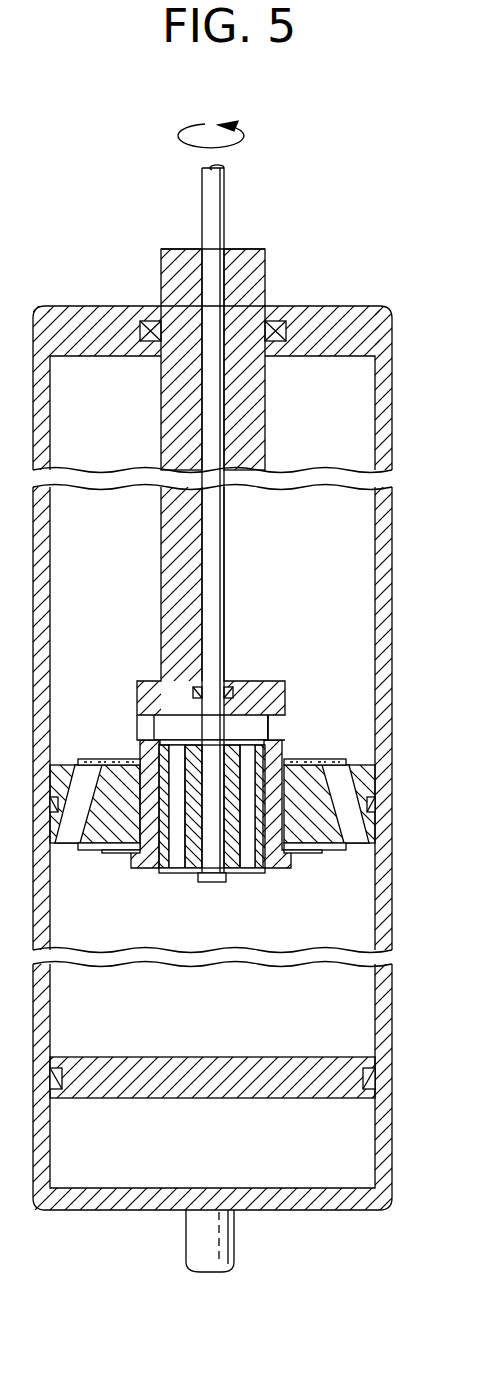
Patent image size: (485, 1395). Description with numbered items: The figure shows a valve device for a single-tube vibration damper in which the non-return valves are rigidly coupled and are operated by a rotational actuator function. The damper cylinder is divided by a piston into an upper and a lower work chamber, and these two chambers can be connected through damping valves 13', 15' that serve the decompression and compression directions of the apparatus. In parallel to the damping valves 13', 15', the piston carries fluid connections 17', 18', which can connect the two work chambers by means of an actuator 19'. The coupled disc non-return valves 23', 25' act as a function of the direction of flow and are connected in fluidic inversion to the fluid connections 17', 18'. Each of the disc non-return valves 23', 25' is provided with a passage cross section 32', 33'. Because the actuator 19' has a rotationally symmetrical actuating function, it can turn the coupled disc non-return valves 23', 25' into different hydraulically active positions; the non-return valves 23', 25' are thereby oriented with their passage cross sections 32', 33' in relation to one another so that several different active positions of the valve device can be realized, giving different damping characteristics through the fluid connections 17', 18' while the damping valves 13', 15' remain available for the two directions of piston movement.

The damping valve 13' is at (95, 764).
The damping valve 15' is at (329, 824).
The fluid connection 17' is at (229, 841).
The fluid connection 18' is at (174, 835).
The actuator 19' is at (199, 551).
The disc non-return valve 23' is at (317, 713).
The disc non-return valve 25' is at (258, 906).
The passage cross section 32' is at (246, 698).
The passage cross section 33' is at (189, 841).